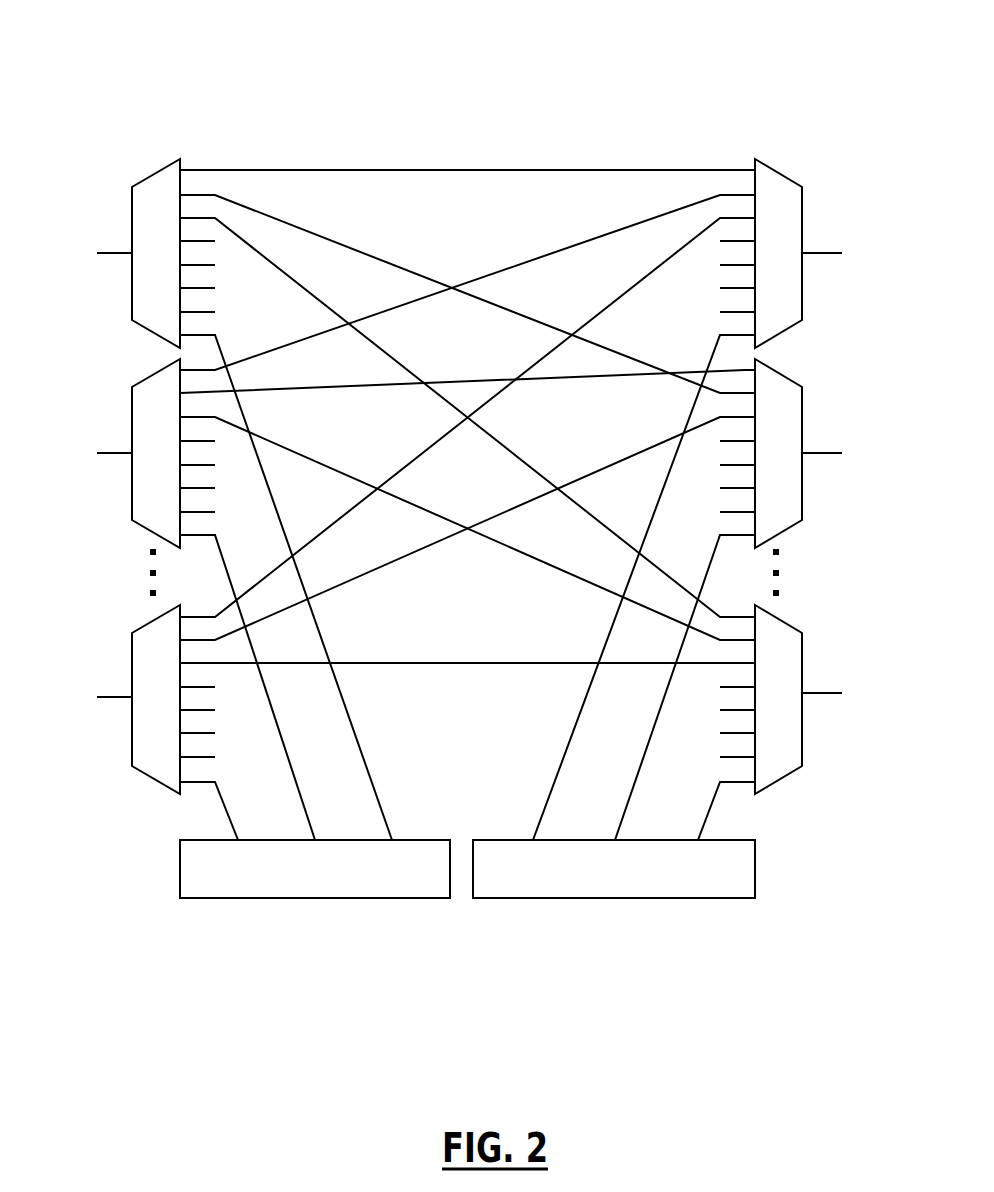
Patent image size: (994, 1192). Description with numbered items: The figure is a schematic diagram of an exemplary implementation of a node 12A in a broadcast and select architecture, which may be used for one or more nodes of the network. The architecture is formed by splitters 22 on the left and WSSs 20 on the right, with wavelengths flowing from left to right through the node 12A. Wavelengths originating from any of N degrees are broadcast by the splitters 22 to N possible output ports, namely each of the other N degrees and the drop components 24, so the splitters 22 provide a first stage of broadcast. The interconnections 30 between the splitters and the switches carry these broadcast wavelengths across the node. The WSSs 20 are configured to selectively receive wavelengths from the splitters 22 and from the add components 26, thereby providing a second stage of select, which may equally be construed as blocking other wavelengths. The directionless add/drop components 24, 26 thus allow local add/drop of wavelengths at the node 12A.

The node 12A is at (522, 62).
The 1:N splitters 22 is at (157, 132).
The WSSs 20 is at (792, 132).
The interconnections 30 is at (479, 475).
The drop components 24 is at (178, 875).
The add components 26 is at (757, 875).